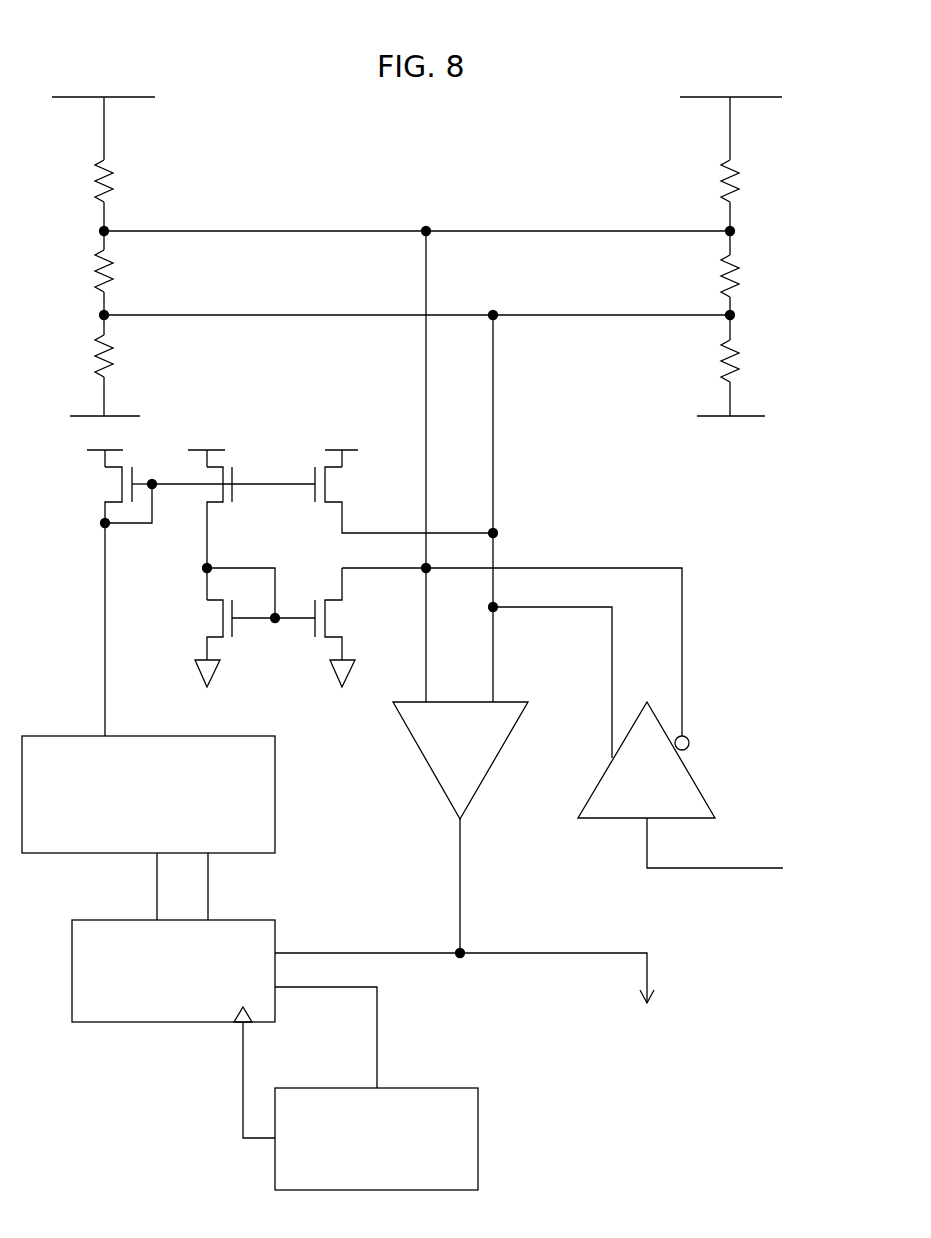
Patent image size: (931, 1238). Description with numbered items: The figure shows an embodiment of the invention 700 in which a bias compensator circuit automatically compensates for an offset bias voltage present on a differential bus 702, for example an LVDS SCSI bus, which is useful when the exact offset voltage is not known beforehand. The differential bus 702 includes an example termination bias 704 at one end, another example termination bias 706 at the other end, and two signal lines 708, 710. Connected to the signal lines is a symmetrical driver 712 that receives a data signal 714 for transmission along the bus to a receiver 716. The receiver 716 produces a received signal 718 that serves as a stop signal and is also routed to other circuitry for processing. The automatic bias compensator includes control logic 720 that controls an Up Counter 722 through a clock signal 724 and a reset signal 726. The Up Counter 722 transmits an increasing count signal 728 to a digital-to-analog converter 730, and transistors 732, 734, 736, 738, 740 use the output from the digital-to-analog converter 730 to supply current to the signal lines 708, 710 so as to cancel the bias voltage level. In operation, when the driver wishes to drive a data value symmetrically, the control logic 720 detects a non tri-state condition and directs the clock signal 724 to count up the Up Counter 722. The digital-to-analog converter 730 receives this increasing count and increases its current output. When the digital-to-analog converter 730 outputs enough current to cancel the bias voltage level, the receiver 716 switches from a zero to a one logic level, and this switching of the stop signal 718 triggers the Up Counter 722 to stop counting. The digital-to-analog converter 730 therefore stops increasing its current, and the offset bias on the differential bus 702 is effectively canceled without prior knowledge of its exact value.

The embodiment of the invention 700 is at (571, 167).
The differential bus 702 is at (312, 214).
The termination bias 704 is at (100, 88).
The termination bias 706 is at (729, 88).
The signal line 708 is at (595, 234).
The signal line 710 is at (595, 318).
The symmetrical driver 712 is at (692, 781).
The data signal 714 is at (723, 871).
The receiver 716 is at (483, 759).
The received signal 718 is at (462, 884).
The control logic 720 is at (466, 1147).
The Up Counter 722 is at (90, 1012).
The clock signal 724 is at (240, 1124).
The reset signal 726 is at (378, 1068).
The count signal 728 is at (248, 886).
The digital-to-analog converter 730 is at (262, 790).
The transistor 732 is at (111, 484).
The transistor 734 is at (230, 465).
The transistor 736 is at (336, 484).
The transistor 738 is at (215, 620).
The transistor 740 is at (336, 620).